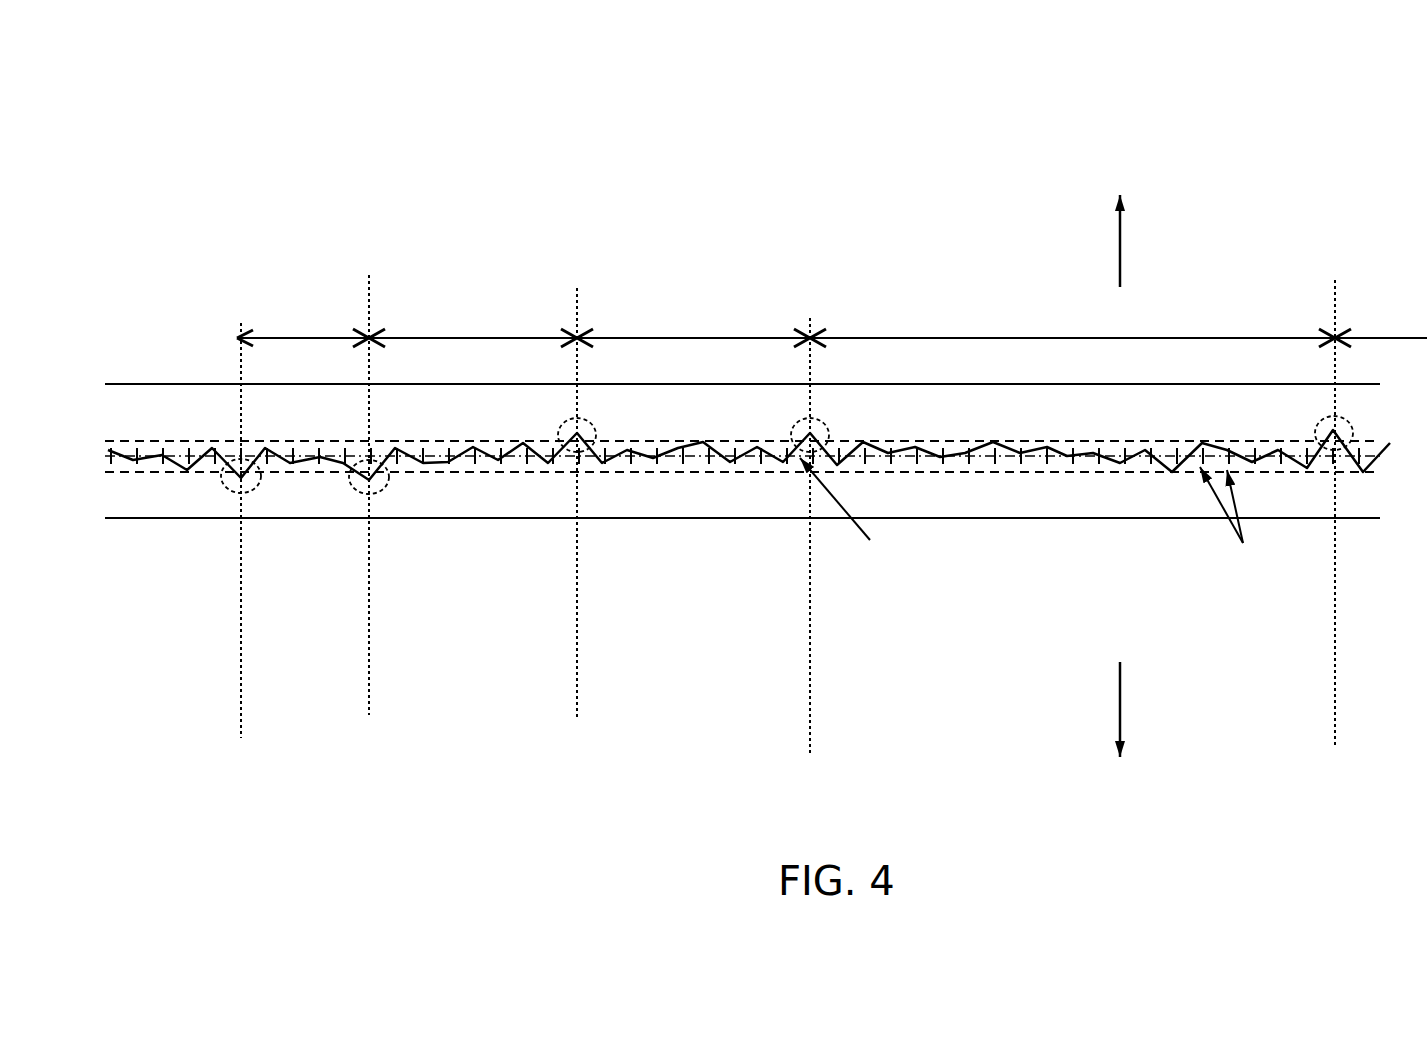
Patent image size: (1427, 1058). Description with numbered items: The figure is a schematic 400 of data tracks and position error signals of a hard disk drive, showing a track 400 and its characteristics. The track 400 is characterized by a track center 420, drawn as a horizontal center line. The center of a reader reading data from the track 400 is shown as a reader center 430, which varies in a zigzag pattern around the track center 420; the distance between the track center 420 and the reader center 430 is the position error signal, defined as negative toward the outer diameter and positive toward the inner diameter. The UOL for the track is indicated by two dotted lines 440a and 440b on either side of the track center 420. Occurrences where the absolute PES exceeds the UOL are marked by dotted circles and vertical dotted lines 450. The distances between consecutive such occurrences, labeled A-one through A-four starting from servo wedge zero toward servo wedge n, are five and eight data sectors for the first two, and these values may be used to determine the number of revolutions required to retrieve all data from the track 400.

The track 400 is at (751, 436).
The track center 420 is at (238, 456).
The reader center 430 is at (378, 472).
The dotted line 440a is at (903, 477).
The dotted line 440b is at (970, 442).
The dotted lines 450 is at (1330, 640).